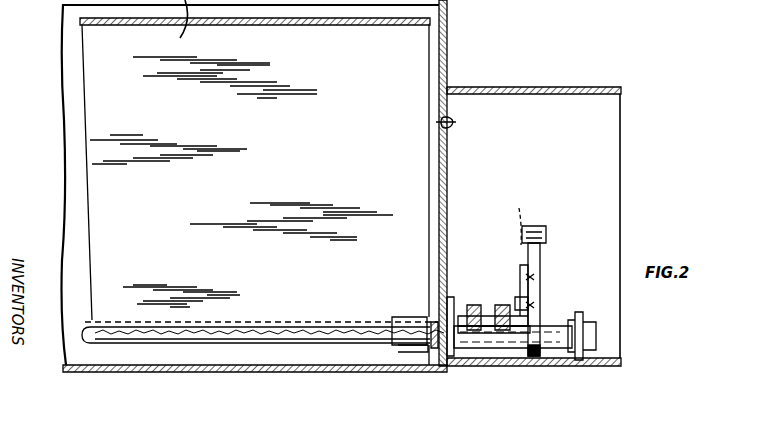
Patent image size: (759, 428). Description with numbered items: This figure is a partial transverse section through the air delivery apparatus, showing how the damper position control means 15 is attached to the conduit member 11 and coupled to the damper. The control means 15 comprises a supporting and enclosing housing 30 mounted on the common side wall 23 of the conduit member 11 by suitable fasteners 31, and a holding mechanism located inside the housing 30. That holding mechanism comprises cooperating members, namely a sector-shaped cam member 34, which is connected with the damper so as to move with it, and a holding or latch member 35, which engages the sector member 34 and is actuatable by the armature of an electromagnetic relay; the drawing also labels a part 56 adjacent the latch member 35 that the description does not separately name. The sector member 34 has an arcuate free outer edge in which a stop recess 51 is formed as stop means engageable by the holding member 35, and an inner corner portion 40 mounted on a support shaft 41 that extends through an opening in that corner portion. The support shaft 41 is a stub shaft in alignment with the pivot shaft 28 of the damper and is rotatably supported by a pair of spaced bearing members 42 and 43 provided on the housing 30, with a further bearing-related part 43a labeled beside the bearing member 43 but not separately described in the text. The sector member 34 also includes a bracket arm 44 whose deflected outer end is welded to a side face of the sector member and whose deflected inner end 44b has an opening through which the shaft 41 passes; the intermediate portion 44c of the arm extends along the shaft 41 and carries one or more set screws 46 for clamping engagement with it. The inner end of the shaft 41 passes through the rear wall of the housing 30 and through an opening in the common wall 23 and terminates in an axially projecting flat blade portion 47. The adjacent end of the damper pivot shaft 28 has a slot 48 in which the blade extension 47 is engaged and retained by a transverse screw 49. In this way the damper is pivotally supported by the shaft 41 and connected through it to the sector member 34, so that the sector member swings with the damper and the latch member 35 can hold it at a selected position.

The conduit member 11 is at (452, 19).
The damper position control means 15 is at (555, 240).
The common side wall 23 is at (447, 50).
The pivot shaft 28 is at (212, 343).
The housing 30 is at (505, 88).
The fasteners 31 is at (456, 124).
The sector member 34 is at (541, 255).
The holding member 35 is at (535, 227).
The inner corner portion 40 is at (506, 360).
The support shaft 41 is at (555, 325).
The bearing member 42 is at (582, 316).
The bearing member 43 is at (454, 300).
The plate arm 43a is at (522, 300).
The bracket arm 44 is at (522, 275).
The deflected inner end 44b is at (460, 340).
The intermediate portion 44c is at (482, 306).
The set screws 46 is at (531, 305).
The flat blade portion 47 is at (412, 346).
The slot 48 is at (428, 342).
The transverse screw 49 is at (404, 316).
The stop recess 51 is at (524, 217).
The terminal 56 is at (542, 236).